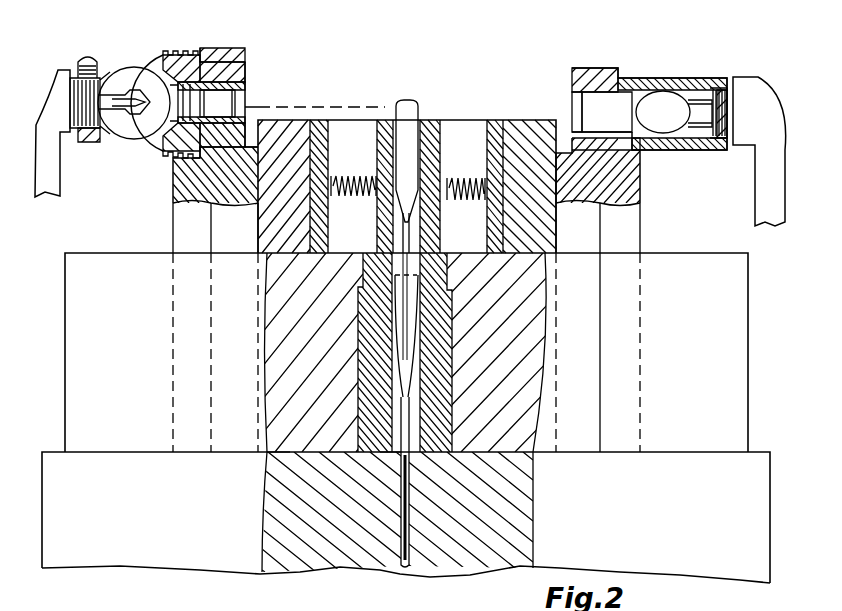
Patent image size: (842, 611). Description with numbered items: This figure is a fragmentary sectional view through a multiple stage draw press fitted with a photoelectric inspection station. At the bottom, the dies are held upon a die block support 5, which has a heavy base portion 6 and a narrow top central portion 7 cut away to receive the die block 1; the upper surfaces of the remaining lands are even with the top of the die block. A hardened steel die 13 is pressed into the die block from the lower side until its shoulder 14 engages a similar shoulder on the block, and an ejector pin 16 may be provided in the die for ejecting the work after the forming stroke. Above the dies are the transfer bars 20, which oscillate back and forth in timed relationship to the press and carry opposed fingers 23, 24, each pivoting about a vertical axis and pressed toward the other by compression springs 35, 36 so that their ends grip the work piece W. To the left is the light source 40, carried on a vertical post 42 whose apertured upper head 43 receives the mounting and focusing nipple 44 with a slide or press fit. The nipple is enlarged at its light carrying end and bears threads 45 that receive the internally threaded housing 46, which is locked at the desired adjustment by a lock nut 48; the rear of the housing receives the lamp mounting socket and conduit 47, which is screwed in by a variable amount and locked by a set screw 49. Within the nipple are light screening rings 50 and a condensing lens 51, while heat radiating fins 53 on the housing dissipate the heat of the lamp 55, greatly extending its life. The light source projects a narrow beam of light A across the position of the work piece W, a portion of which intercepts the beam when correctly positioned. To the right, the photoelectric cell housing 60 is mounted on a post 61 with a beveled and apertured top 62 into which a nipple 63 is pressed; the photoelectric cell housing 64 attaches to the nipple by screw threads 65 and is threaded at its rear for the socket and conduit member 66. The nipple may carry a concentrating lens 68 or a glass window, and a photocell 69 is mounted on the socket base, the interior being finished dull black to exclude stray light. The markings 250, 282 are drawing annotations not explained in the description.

The die block 1 is at (92, 332).
The die block support 5 is at (483, 556).
The heavy base portion 6 is at (75, 540).
The narrow top central portion 7 is at (255, 420).
The hardened steel die 13 is at (443, 393).
The shoulder 14 is at (362, 284).
The ejector pin 16 is at (402, 547).
The transfer bars 20 is at (298, 128).
The finger 23 is at (385, 121).
The finger 24 is at (436, 121).
The compression spring 35 is at (356, 197).
The compression spring 36 is at (465, 201).
The light source 40 is at (150, 101).
The vertical post 42 is at (190, 236).
The apertured upper head 43 is at (247, 64).
The mounting and focusing nipple 44 is at (240, 80).
The threads 45 is at (205, 60).
The housing 46 is at (195, 52).
The lamp mounting socket and conduit 47 is at (40, 120).
The lock nut 48 is at (222, 48).
The set screw 49 is at (88, 60).
The light screening rings 50 is at (200, 104).
The condensing lens 51 is at (250, 102).
The heat radiating fins 53 is at (138, 50).
The lamp 55 is at (132, 126).
The photoelectric cell housing 60 is at (667, 128).
The post 61 is at (624, 240).
The beveled and apertured top 62 is at (588, 78).
The nipple 63 is at (602, 78).
The photoelectric cell housing 64 is at (655, 78).
The screw threads 65 is at (625, 84).
The socket and conduit member 66 is at (760, 118).
The concentrating lens 68 is at (576, 108).
The photocell 69 is at (668, 106).
The die edge 250 is at (282, 530).
The die edge 282 is at (370, 531).
The beam of light A is at (268, 107).
The work piece W is at (405, 148).